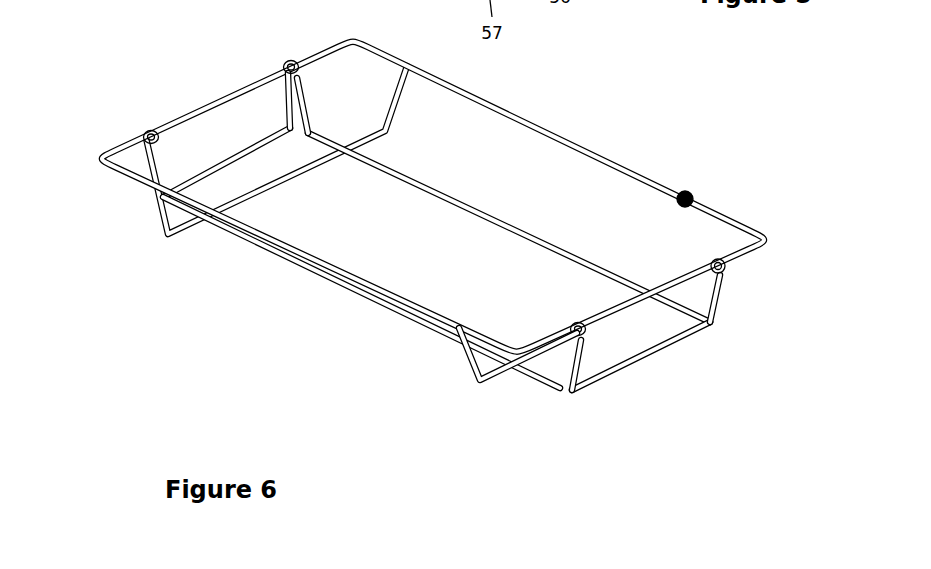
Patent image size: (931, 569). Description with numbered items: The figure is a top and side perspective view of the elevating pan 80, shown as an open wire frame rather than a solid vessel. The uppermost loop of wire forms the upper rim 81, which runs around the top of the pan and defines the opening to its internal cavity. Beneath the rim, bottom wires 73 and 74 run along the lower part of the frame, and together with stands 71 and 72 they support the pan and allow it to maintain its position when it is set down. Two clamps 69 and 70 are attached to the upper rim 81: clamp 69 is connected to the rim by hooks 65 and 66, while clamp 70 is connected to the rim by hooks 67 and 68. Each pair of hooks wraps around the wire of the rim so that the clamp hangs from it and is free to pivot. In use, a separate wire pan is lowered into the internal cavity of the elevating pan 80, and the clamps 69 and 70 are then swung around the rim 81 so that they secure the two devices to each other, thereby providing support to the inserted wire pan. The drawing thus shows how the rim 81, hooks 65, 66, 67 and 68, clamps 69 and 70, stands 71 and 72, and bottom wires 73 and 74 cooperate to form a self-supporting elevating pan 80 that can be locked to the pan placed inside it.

The hook 65 is at (291, 60).
The hook 66 is at (145, 131).
The hook 67 is at (727, 268).
The hook 68 is at (586, 331).
The clamp 69 is at (263, 143).
The clamp 70 is at (650, 355).
The stand 71 is at (168, 237).
The stand 72 is at (481, 382).
The bottom wire 73 is at (347, 291).
The bottom wire 74 is at (452, 196).
The elevating pan 80 is at (693, 198).
The upper rim 81 is at (607, 156).